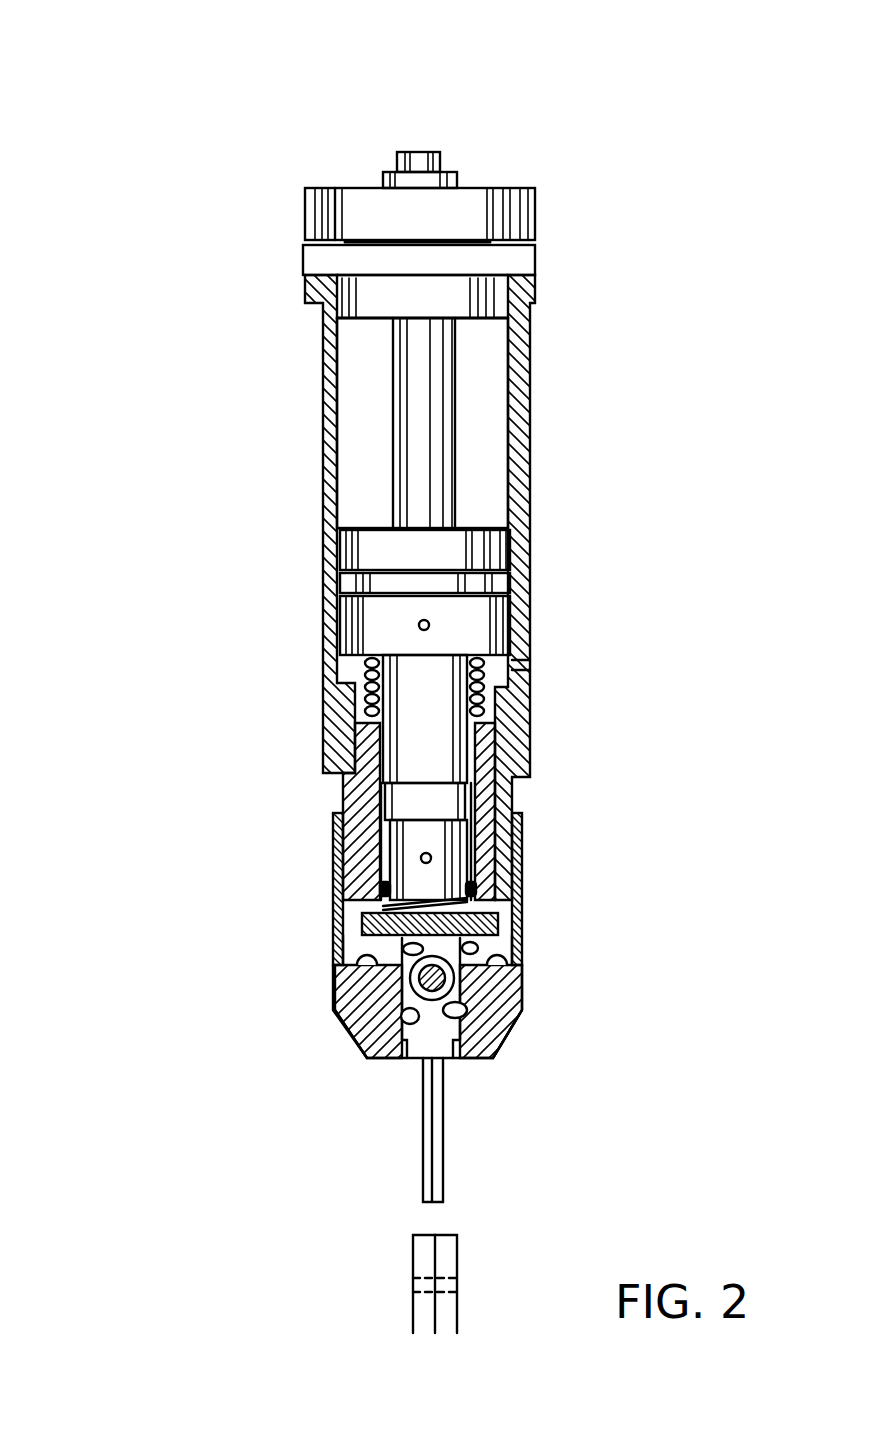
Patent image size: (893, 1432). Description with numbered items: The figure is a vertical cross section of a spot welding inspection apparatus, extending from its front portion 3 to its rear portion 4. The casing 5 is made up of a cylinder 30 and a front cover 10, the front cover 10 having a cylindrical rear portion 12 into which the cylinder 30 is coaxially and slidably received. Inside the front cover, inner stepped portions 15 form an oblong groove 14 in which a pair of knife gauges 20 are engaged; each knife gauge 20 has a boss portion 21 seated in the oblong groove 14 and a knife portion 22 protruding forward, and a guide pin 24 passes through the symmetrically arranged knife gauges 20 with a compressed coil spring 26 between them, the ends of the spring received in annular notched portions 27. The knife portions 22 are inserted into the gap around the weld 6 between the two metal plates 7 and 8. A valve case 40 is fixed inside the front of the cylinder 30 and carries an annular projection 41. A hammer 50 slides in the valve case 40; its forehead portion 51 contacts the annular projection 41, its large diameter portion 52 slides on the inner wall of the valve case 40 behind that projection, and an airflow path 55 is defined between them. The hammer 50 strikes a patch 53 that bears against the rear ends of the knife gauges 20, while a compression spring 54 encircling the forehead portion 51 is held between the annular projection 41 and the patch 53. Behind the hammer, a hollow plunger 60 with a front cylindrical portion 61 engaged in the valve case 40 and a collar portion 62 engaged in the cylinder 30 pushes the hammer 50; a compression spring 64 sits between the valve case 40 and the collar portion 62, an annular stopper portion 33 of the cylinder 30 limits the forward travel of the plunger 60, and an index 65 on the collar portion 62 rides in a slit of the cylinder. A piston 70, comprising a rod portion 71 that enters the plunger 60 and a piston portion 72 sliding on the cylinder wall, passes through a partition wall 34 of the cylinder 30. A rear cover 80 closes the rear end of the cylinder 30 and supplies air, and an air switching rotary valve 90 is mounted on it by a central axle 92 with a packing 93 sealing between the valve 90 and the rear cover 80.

The front portion of the apparatus 3 is at (318, 1220).
The rear portion of the apparatus 4 is at (332, 60).
The casing 5 is at (664, 730).
The weld 6 is at (450, 1285).
The metal plate 7 is at (422, 1250).
The metal plate 8 is at (448, 1257).
The front cover 10 is at (517, 838).
The cylindrical rear portion 12 is at (336, 993).
The oblong groove 14 is at (470, 1010).
The inner stepped portion 15 is at (368, 962).
The knife gauge 20 is at (512, 1148).
The boss portion 21 is at (497, 1030).
The knife portion 22 is at (425, 1178).
The guide pin 24 is at (455, 984).
The coil spring 26 is at (405, 947).
The annular notched portion 27 is at (372, 1012).
The cylinder 30 is at (528, 742).
The annular stopper portion 33 is at (528, 672).
The partition wall 34 is at (525, 543).
The valve case 40 is at (365, 738).
The annular projection 41 is at (380, 862).
The hammer 50 is at (190, 745).
The forehead portion 51 is at (400, 833).
The large diameter portion 52 is at (400, 793).
The patch 53 is at (500, 920).
The compression spring 54 is at (470, 888).
The airflow path 55 is at (431, 858).
The hollow plunger 60 is at (160, 552).
The front cylindrical portion 61 is at (365, 665).
The collar portion 62 is at (370, 612).
The compression spring 64 is at (480, 660).
The index 65 is at (430, 626).
The piston 70 is at (603, 345).
The rod portion 71 is at (420, 412).
The piston portion 72 is at (473, 320).
The rear cover 80 is at (523, 262).
The air switching rotary valve 90 is at (525, 210).
The central axle 92 is at (422, 152).
The packing 93 is at (352, 235).